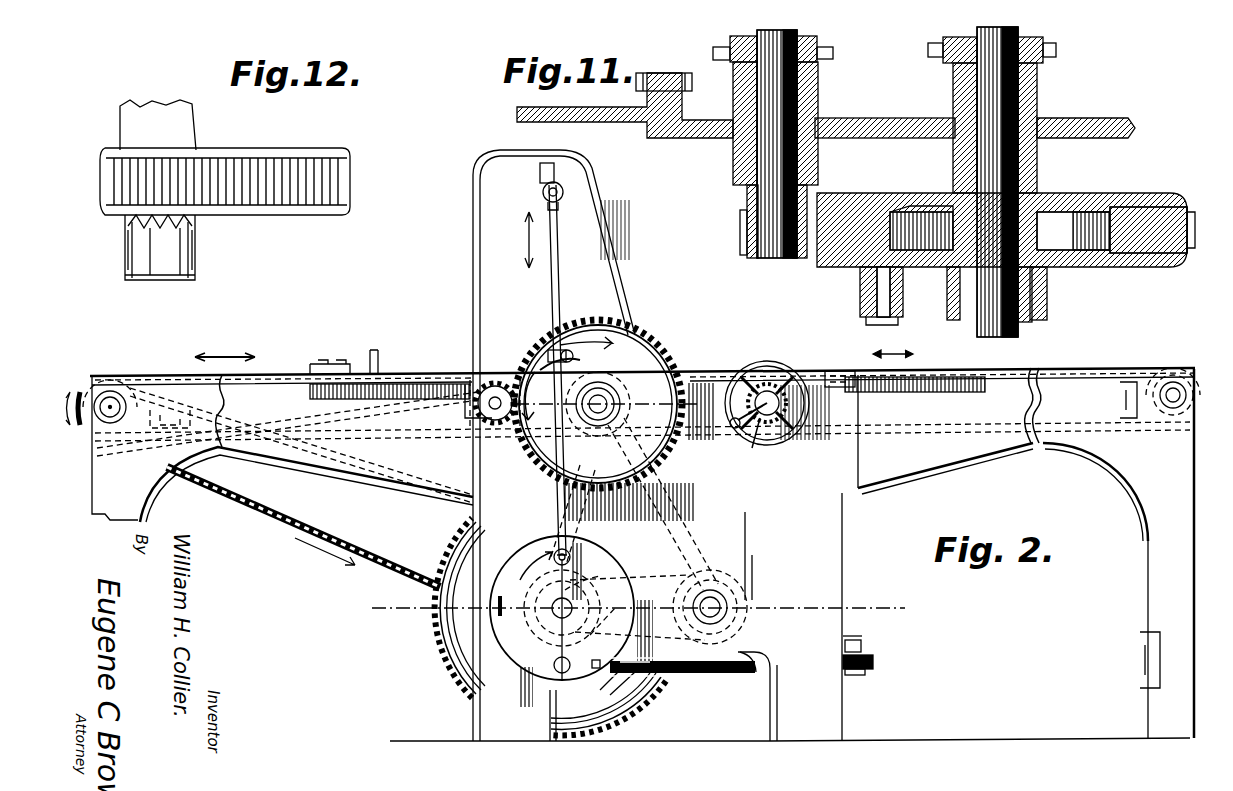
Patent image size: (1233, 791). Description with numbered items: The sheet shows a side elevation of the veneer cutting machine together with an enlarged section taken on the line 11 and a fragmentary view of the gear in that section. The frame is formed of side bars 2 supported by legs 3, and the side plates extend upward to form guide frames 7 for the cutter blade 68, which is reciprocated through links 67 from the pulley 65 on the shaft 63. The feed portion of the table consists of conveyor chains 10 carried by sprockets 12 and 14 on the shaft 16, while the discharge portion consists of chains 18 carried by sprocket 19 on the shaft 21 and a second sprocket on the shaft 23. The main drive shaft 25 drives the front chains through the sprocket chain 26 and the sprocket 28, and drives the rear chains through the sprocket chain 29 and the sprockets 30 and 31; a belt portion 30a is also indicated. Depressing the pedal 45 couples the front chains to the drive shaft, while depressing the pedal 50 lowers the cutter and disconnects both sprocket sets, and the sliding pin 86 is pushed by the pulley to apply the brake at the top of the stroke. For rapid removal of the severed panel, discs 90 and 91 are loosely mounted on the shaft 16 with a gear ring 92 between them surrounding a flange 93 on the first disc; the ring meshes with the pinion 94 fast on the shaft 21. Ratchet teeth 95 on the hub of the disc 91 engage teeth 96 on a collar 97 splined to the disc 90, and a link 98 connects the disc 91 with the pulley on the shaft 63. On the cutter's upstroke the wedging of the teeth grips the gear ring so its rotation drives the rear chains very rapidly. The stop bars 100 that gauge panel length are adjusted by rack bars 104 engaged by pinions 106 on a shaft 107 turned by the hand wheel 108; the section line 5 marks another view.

In FIG. 2, the side bars 2 is at (292, 458).
In FIG. 2, the legs 3 is at (97, 485).
In FIG. 2, the section line 5 is at (633, 609).
In FIG. 2, the guide frames 7 is at (597, 227).
In FIG. 2, the conveyor chains 10 is at (906, 432).
In FIG. 2, the section line 11 is at (430, 400).
In FIG. 2, the sprocket 12 is at (1186, 382).
In FIG. 11, the sprocket 14 is at (943, 57).
In FIG. 11, the shaft 16 is at (1022, 168).
In FIG. 2, the shaft 16 is at (606, 395).
In FIG. 2, the chains 18 is at (360, 428).
In FIG. 11, the sprocket 19 is at (722, 50).
In FIG. 11, the shaft 21 is at (765, 155).
In FIG. 2, the shaft 21 is at (494, 384).
In FIG. 2, the shaft 23 is at (111, 397).
In FIG. 2, the main drive shaft 25 is at (732, 600).
In FIG. 2, the sprocket chain 26 is at (733, 531).
In FIG. 2, the sprocket 28 is at (602, 438).
In FIG. 2, the sprocket chain 29 is at (378, 560).
In FIG. 2, the sprocket 30 is at (662, 577).
In FIG. 2, the belt 30a is at (582, 604).
In FIG. 2, the sprocket 31 is at (90, 420).
In FIG. 2, the pedal 45 is at (872, 672).
In FIG. 2, the pedal 50 is at (735, 680).
In FIG. 2, the shaft 63 is at (555, 612).
In FIG. 2, the pulley 65 is at (528, 670).
In FIG. 2, the links 67 is at (548, 296).
In FIG. 2, the cutter blade 68 is at (530, 244).
In FIG. 2, the sliding pin 86 is at (609, 637).
In FIG. 12, the disc 90 is at (285, 152).
In FIG. 11, the disc 90 is at (1122, 189).
In FIG. 11, the disc 91 is at (1143, 268).
In FIG. 2, the disc 91 is at (610, 327).
In FIG. 12, the gear ring 92 is at (348, 172).
In FIG. 11, the gear ring 92 is at (1166, 212).
In FIG. 2, the gear ring 92 is at (668, 345).
In FIG. 11, the flange 93 is at (1106, 266).
In FIG. 11, the pinion 94 is at (752, 250).
In FIG. 2, the pinion 94 is at (490, 418).
In FIG. 12, the ratchet teeth 95 is at (128, 228).
In FIG. 12, the teeth 96 is at (196, 228).
In FIG. 12, the collar 97 is at (128, 258).
In FIG. 11, the collar 97 is at (946, 300).
In FIG. 2, the link 98 is at (492, 428).
In FIG. 2, the stop bars 100 is at (374, 350).
In FIG. 2, the rack bars 104 is at (950, 366).
In FIG. 2, the pinions 106 is at (790, 453).
In FIG. 2, the shaft 107 is at (739, 430).
In FIG. 2, the hand wheel 108 is at (790, 350).